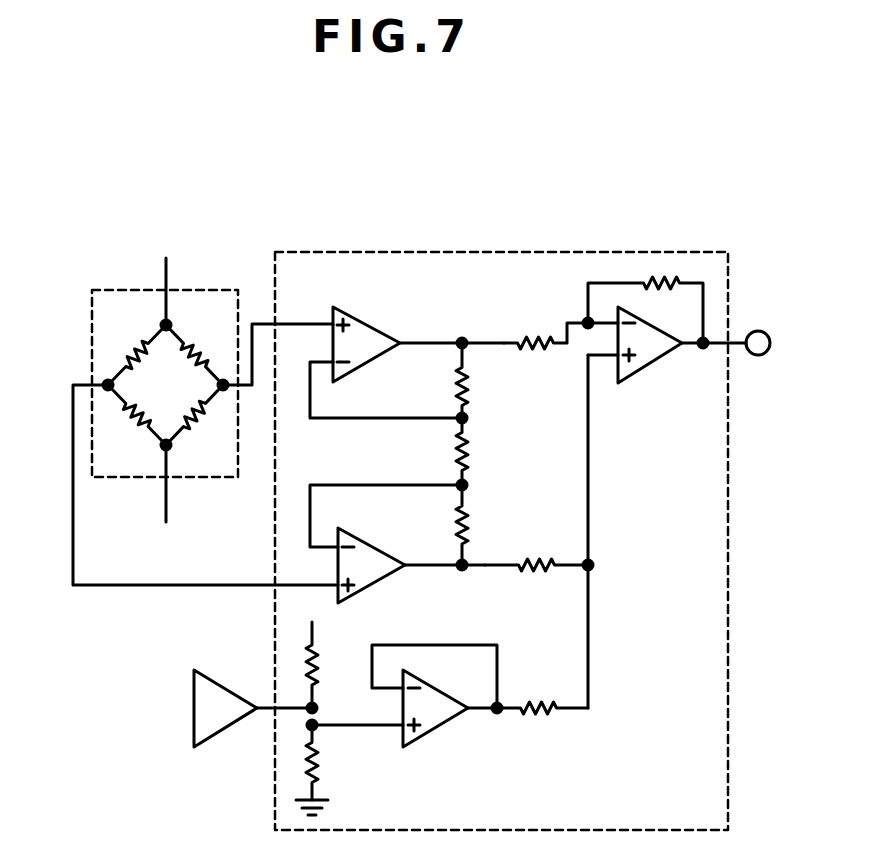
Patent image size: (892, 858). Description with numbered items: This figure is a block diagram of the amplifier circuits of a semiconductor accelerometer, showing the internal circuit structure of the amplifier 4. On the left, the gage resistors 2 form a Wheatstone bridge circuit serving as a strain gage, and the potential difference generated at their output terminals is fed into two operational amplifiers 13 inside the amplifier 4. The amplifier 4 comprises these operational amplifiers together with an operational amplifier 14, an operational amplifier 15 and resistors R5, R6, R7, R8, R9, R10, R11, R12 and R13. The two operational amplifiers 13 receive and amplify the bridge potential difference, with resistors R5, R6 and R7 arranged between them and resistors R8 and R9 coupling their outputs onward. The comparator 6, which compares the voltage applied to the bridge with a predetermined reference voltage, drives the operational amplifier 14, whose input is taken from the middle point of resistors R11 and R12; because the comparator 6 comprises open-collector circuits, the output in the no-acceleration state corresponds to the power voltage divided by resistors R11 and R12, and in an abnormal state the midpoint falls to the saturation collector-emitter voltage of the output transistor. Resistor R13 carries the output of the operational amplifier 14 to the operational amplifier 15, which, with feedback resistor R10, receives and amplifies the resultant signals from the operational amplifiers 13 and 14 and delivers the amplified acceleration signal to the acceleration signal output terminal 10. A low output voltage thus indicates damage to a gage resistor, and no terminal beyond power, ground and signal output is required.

The gage resistors 2 is at (132, 290).
The amplifier 4 is at (480, 252).
The comparator 6 is at (220, 737).
The acceleration signal output terminal 10 is at (767, 330).
The operational amplifiers 13 is at (373, 323).
The operational amplifier 14 is at (428, 733).
The operational amplifier 15 is at (640, 368).
The resistor R5 is at (483, 380).
The resistor R6 is at (483, 451).
The resistor R7 is at (483, 525).
The resistor R8 is at (561, 327).
The resistor R9 is at (536, 584).
The resistor R10 is at (645, 310).
The resistor R11 is at (340, 665).
The resistor R12 is at (335, 770).
The resistor R13 is at (542, 728).